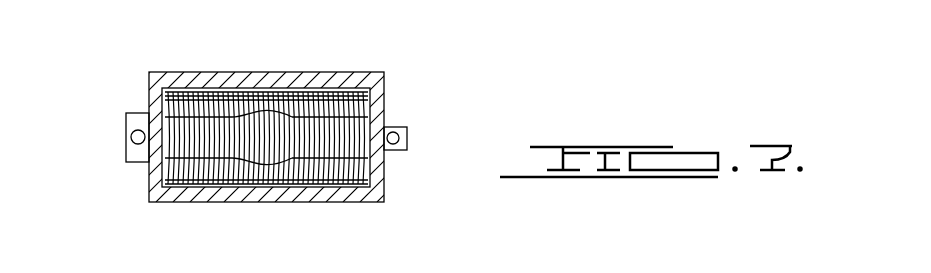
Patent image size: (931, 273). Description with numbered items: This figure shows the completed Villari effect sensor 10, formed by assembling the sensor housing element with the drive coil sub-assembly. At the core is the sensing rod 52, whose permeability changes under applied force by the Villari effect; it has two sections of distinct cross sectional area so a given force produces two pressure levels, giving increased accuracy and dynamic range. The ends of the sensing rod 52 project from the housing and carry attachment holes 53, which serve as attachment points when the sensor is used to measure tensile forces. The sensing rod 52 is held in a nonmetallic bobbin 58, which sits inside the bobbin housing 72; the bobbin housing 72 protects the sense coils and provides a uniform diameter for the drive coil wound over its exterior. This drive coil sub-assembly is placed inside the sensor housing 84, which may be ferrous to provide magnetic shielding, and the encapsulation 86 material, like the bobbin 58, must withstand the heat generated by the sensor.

The Villari effect sensor 10 is at (497, 107).
The encapsulation 86 is at (108, 81).
The sensor housing 84 is at (349, 70).
The bobbin housing 72 is at (380, 100).
The bobbin 58 is at (203, 115).
The sensing rod 52 is at (127, 172).
The attachment holes 53 is at (131, 137).